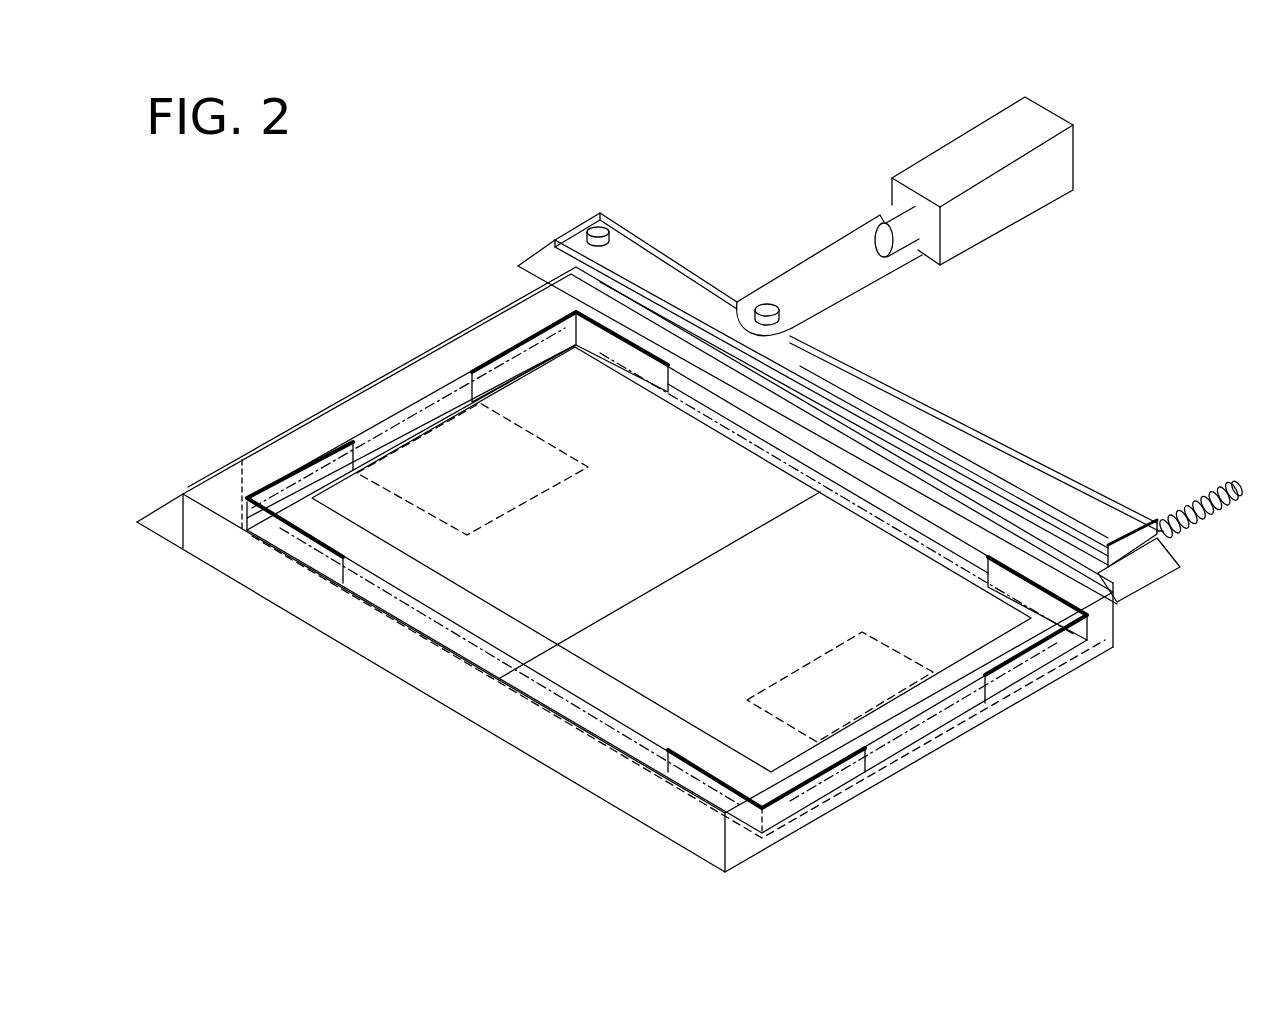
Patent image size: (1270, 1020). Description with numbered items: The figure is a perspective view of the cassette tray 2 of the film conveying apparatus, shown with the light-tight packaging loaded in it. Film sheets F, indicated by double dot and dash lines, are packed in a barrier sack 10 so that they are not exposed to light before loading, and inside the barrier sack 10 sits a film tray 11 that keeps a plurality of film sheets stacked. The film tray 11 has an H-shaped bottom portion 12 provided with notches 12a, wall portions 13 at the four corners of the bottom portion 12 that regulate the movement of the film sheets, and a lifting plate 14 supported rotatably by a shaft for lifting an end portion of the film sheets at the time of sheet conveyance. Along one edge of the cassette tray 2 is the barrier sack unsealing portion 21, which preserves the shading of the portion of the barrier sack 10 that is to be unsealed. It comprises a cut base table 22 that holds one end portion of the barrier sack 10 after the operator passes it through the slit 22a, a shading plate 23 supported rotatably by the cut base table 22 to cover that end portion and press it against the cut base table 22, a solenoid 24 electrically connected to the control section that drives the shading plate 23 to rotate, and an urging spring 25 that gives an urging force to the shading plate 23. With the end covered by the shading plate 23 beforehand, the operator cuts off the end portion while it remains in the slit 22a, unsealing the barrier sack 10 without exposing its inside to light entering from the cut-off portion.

The cassette tray 2 is at (1103, 628).
The barrier sack 10 is at (280, 455).
The film tray 11 is at (752, 482).
The bottom portion 12 is at (522, 607).
The notches 12a is at (535, 436).
The wall portions 13 is at (641, 377).
The lifting plate 14 is at (537, 393).
The barrier sack unsealing portion 21 is at (935, 394).
The cut base table 22 is at (1152, 563).
The slit 22a is at (1003, 489).
The shading plate 23 is at (632, 252).
The solenoid 24 is at (960, 142).
The urging spring 25 is at (1203, 494).
The film sheets F is at (585, 707).